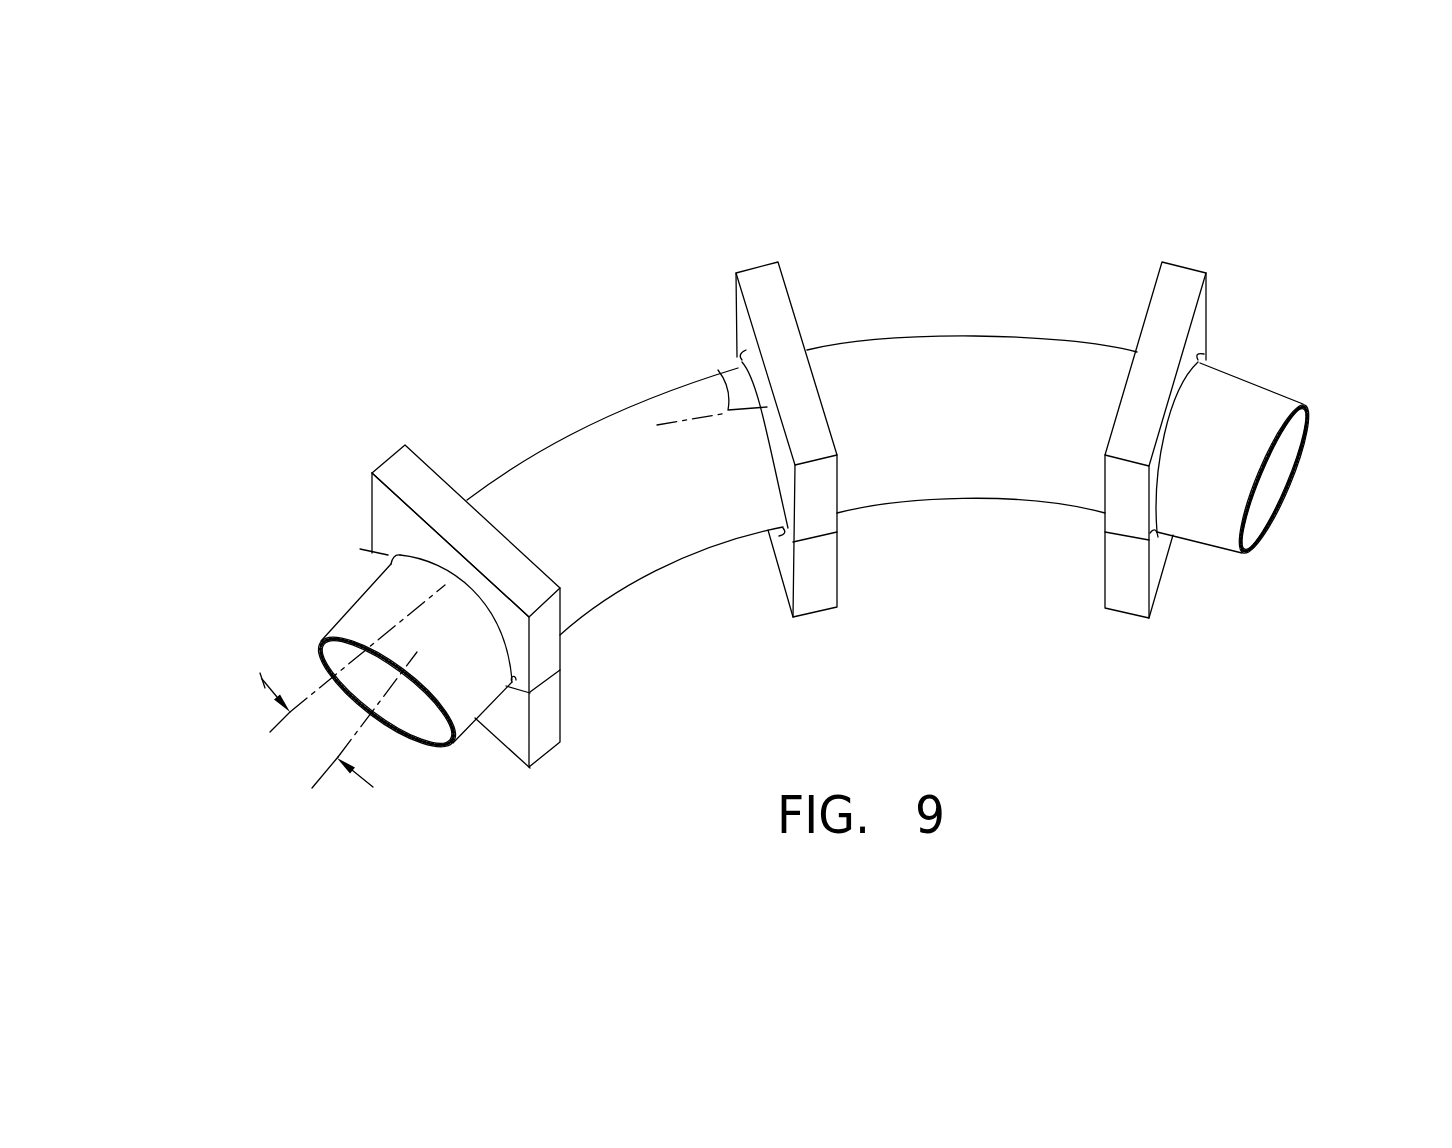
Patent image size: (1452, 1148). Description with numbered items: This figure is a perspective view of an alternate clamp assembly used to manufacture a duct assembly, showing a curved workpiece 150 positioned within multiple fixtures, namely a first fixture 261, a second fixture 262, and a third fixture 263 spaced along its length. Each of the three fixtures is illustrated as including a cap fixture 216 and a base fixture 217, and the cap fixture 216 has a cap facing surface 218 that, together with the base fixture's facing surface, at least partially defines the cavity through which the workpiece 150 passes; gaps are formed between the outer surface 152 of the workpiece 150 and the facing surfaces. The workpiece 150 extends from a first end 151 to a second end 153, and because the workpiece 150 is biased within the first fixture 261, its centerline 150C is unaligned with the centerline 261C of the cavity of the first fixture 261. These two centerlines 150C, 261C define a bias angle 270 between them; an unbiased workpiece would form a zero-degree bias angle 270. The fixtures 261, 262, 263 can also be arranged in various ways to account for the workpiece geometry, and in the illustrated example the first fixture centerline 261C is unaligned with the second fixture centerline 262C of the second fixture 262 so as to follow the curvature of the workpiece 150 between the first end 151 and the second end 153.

The workpiece 150 is at (563, 468).
The centerline of the workpiece 150C is at (325, 775).
The first end 151 is at (437, 750).
The outer surface 152 is at (477, 702).
The second end 153 is at (1306, 412).
The cap fixture 216 is at (390, 517).
The base fixture 217 is at (535, 745).
The cap facing surface 218 is at (508, 687).
The first fixture 261 is at (343, 488).
The first fixture centerline 261C is at (378, 630).
The second fixture 262 is at (718, 221).
The second fixture centerline 262C is at (715, 367).
The third fixture 263 is at (1233, 258).
The bias angle 270 is at (260, 682).